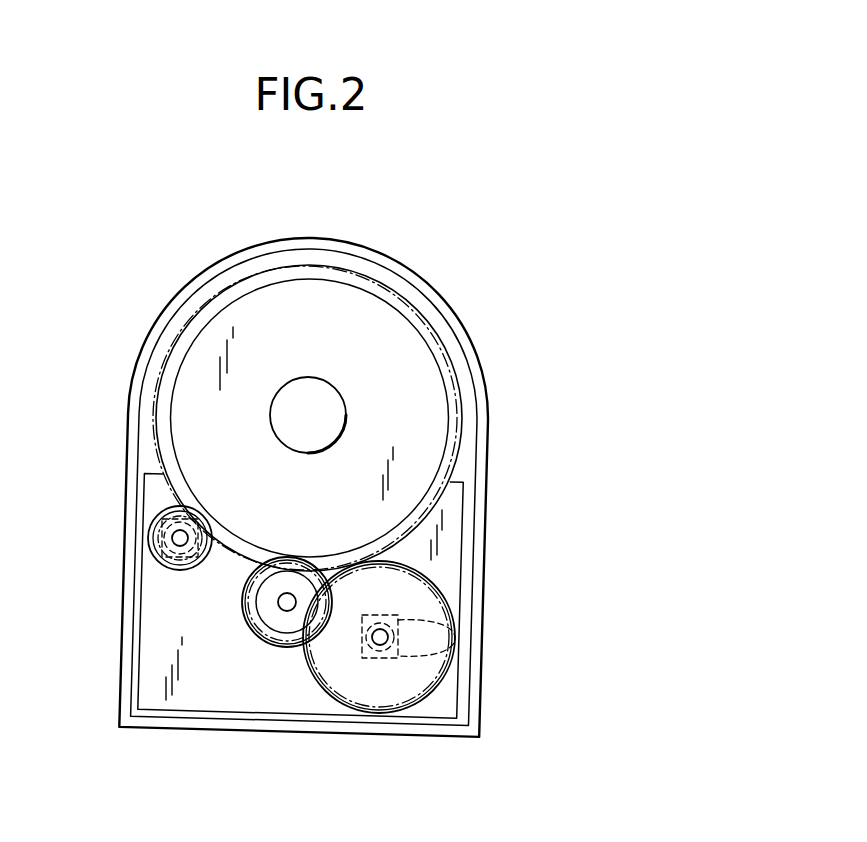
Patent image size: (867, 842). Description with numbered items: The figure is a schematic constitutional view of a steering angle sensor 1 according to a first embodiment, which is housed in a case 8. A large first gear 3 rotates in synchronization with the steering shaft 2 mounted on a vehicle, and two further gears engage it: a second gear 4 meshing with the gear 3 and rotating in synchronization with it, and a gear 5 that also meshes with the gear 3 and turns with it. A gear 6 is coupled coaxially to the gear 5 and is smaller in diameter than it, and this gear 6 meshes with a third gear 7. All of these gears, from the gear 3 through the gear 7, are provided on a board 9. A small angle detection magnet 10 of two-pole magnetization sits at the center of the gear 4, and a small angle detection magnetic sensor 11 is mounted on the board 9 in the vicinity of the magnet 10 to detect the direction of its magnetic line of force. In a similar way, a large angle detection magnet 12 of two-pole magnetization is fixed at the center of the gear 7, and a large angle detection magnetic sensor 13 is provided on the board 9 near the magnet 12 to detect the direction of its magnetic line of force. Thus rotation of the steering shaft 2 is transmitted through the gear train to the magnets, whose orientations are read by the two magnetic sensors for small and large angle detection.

The steering angle sensor 1 is at (437, 232).
The steering shaft 2 is at (323, 402).
The gear (first gear) 3 is at (449, 345).
The gear (second gear) 4 is at (157, 513).
The gear 5 is at (242, 600).
The gear 6 is at (277, 606).
The gear (third gear) 7 is at (441, 592).
The case 8 is at (141, 353).
The board 9 is at (449, 514).
The small angle detection magnet 10 is at (162, 522).
The small angle detection magnetic sensor 11 is at (165, 546).
The large angle detection magnet 12 is at (463, 653).
The large angle detection magnetic sensor 13 is at (458, 637).